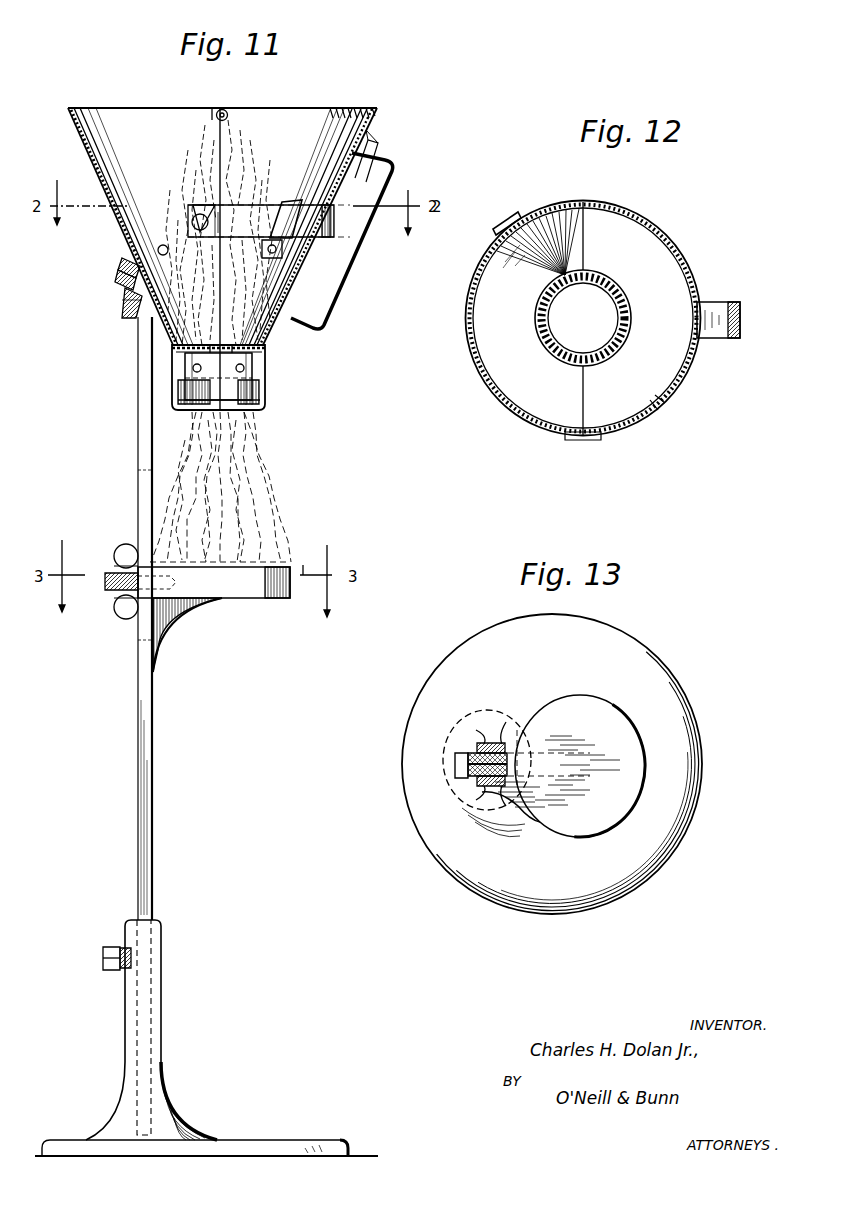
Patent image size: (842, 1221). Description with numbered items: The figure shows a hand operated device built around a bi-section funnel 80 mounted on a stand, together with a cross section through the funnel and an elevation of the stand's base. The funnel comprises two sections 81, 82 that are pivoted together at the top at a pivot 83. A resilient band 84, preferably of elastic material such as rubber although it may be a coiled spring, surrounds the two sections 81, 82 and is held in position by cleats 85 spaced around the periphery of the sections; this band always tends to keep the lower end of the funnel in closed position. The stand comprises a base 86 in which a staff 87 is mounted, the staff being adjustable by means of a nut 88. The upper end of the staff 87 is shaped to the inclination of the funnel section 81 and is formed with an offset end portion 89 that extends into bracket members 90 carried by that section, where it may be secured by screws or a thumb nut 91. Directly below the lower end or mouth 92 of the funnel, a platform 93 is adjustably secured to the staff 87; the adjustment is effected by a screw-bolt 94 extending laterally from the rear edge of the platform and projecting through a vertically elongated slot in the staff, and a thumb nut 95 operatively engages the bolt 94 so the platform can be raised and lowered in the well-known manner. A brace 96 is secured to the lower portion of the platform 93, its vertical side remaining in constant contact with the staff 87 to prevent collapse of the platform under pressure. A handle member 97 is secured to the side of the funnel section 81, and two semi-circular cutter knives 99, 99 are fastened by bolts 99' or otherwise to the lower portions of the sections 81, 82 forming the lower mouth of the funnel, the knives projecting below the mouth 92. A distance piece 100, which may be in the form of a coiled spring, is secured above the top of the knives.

In FIG. 11, the bi-section funnel 80 is at (356, 106).
In FIG. 11, the funnel section 81 is at (289, 109).
In FIG. 12, the funnel section 81 is at (645, 230).
In FIG. 11, the funnel section 82 is at (161, 109).
In FIG. 12, the funnel section 82 is at (478, 290).
In FIG. 11, the pivot 83 is at (229, 112).
In FIG. 11, the resilient band 84 is at (238, 206).
In FIG. 12, the resilient band 84 is at (671, 252).
In FIG. 11, the cleats 85 is at (289, 200).
In FIG. 12, the cleats 85 is at (515, 216).
In FIG. 11, the base 86 is at (250, 1140).
In FIG. 13, the base 86 is at (640, 662).
In FIG. 11, the staff 87 is at (145, 843).
In FIG. 13, the staff 87 is at (495, 750).
In FIG. 11, the nut 88 is at (110, 963).
In FIG. 11, the offset end portion 89 is at (133, 272).
In FIG. 11, the bracket members 90 is at (133, 293).
In FIG. 11, the thumb nut 91 is at (133, 283).
In FIG. 11, the mouth 92 is at (176, 390).
In FIG. 11, the platform 93 is at (272, 566).
In FIG. 13, the platform 93 is at (577, 765).
In FIG. 11, the screw-bolt 94 is at (114, 603).
In FIG. 13, the screw-bolt 94 is at (457, 765).
In FIG. 11, the thumb nut 95 is at (118, 550).
In FIG. 13, the thumb nut 95 is at (487, 742).
In FIG. 11, the brace 96 is at (172, 637).
In FIG. 11, the handle member 97 is at (342, 281).
In FIG. 12, the handle member 97 is at (745, 318).
In FIG. 11, the semi-circular cutter knives 99 is at (243, 374).
In FIG. 11, the bolts 99' is at (172, 376).
In FIG. 11, the distance piece 100 is at (176, 348).
In FIG. 12, the distance piece 100 is at (560, 355).